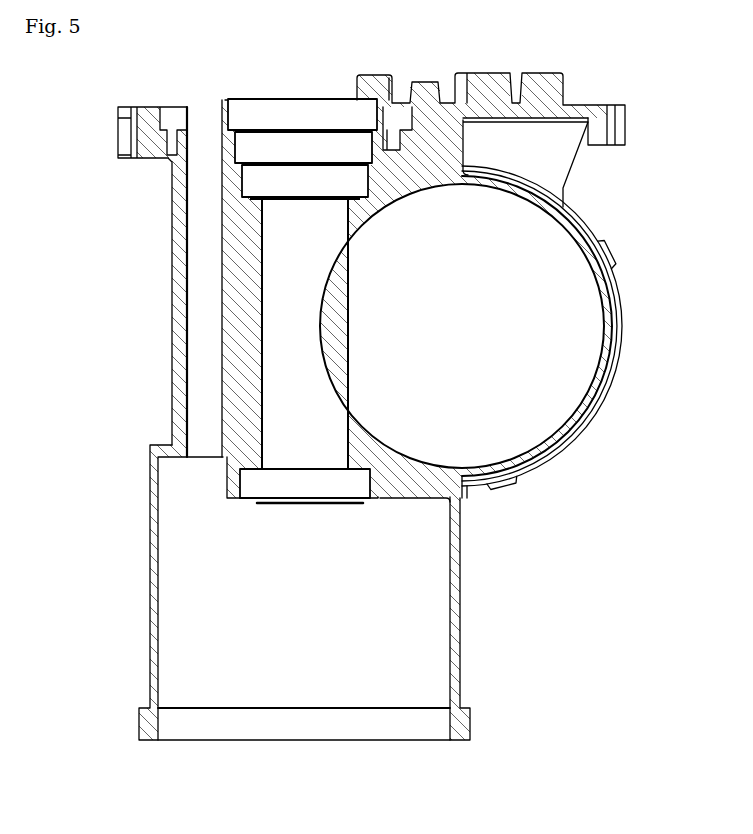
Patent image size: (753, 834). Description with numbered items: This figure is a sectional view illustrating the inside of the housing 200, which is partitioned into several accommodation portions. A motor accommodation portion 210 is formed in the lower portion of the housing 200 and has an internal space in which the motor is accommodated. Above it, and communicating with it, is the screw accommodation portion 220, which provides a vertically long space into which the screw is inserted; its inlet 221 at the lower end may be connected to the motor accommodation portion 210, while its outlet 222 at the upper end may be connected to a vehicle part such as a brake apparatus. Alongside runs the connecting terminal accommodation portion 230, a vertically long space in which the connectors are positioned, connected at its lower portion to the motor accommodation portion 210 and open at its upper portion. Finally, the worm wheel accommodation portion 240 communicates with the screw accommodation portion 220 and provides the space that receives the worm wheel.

The housing 200 is at (128, 404).
The motor accommodation portion 210 is at (243, 608).
The screw accommodation portion 220 is at (290, 329).
The inlet 221 is at (306, 487).
The outlet 222 is at (297, 111).
The connecting terminal accommodation portion 230 is at (204, 266).
The worm wheel accommodation portion 240 is at (566, 210).